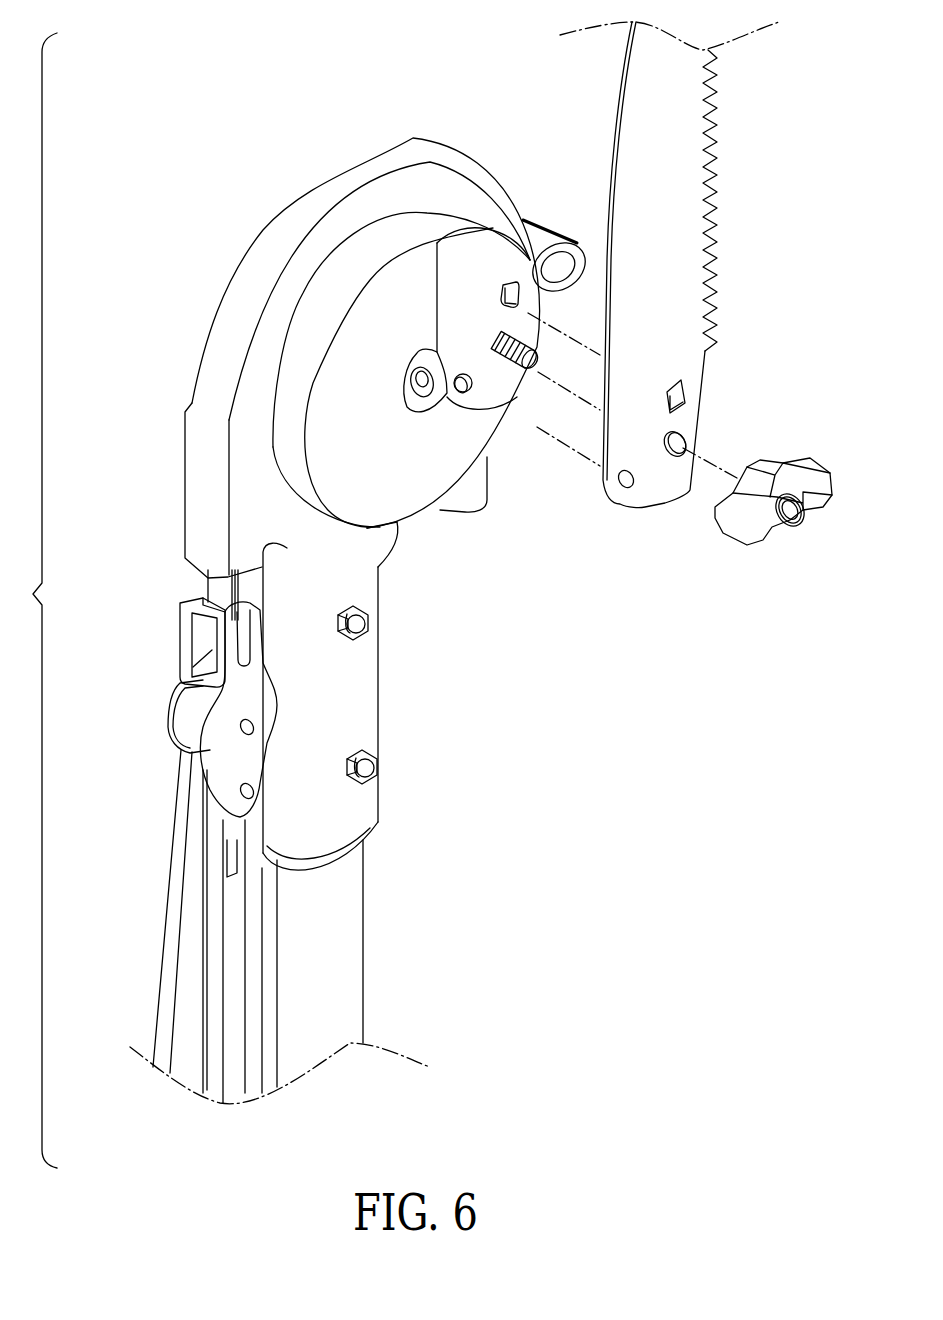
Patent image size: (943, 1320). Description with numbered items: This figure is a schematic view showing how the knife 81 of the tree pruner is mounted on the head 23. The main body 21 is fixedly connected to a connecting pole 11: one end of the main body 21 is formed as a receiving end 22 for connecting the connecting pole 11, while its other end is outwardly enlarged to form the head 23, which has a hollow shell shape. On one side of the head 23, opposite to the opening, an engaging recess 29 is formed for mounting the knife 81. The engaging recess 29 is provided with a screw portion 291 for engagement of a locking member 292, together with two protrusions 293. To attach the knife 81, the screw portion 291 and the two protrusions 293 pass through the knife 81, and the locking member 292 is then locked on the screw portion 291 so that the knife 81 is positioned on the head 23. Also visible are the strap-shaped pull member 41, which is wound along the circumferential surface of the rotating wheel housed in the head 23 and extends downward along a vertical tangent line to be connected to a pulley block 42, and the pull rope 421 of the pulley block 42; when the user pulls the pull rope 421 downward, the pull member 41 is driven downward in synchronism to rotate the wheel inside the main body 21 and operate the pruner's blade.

The connecting pole 11 is at (357, 980).
The main body 21 is at (357, 546).
The receiving end 22 is at (337, 860).
The head 23 is at (310, 196).
The engaging recess 29 is at (485, 260).
The screw portion 291 is at (523, 360).
The locking member 292 is at (743, 537).
The protrusions 293 is at (463, 393).
The pull member 41 is at (207, 576).
The pulley block 42 is at (168, 720).
The pull rope 421 is at (166, 962).
The knife 81 is at (690, 173).